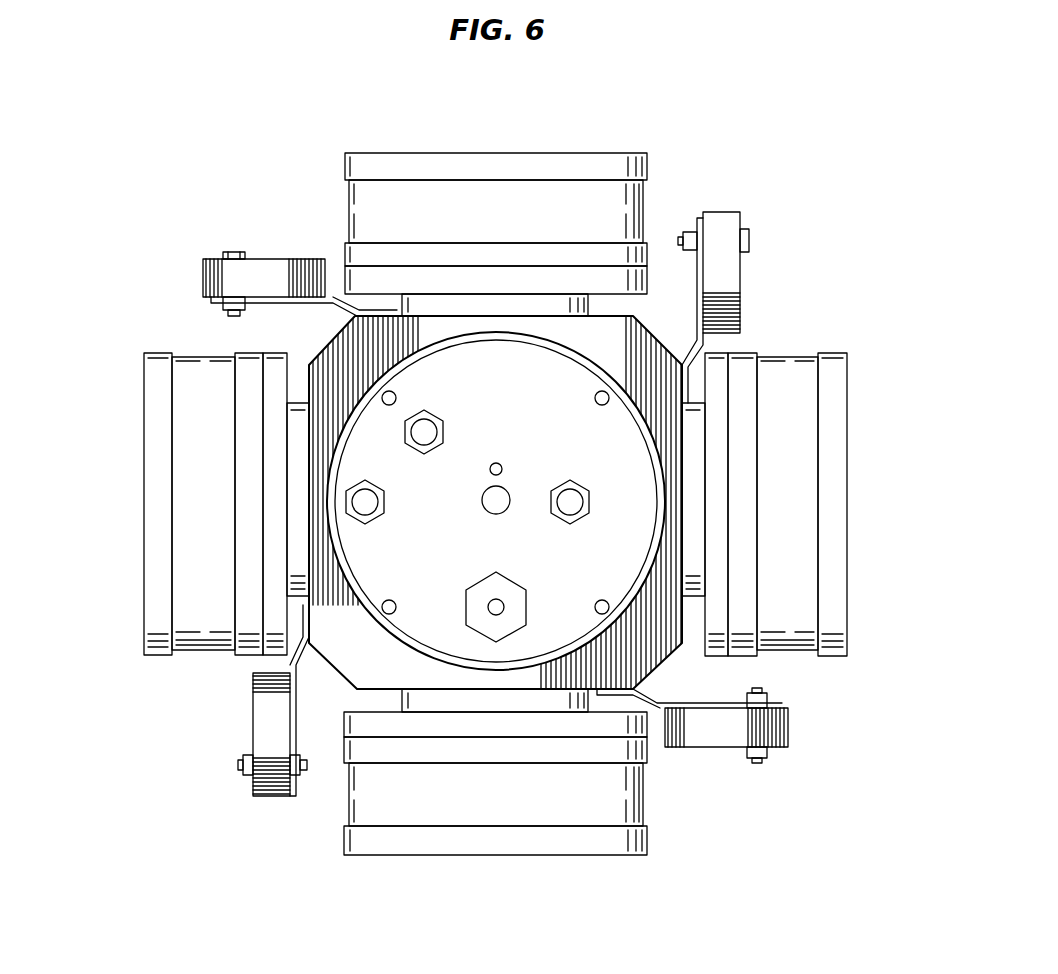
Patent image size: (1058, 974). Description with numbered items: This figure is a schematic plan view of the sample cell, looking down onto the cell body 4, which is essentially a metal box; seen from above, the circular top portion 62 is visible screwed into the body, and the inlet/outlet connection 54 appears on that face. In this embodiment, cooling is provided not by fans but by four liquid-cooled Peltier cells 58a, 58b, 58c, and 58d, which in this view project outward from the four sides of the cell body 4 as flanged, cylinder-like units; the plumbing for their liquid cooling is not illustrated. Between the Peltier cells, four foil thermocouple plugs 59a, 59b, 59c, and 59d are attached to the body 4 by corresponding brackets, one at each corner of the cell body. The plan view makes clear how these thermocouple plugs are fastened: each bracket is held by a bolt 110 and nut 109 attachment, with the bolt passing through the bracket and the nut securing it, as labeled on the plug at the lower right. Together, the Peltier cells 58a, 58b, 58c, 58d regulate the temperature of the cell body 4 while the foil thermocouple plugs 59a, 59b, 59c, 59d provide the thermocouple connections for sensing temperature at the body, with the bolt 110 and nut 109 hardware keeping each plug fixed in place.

The cell body 4 is at (673, 563).
The top portion 62 is at (612, 438).
The inlet/outlet connection 54 is at (482, 625).
The liquid-cooled Peltier cell 58a is at (529, 153).
The liquid-cooled Peltier cell 58b is at (850, 487).
The liquid-cooled Peltier cell 58c is at (537, 855).
The liquid-cooled Peltier cell 58d is at (145, 487).
The foil thermocouple plug 59a is at (742, 270).
The foil thermocouple plug 59b is at (749, 748).
The foil thermocouple plug 59c is at (252, 732).
The foil thermocouple plug 59d is at (272, 258).
The nut 109 is at (767, 753).
The bolt 110 is at (760, 695).